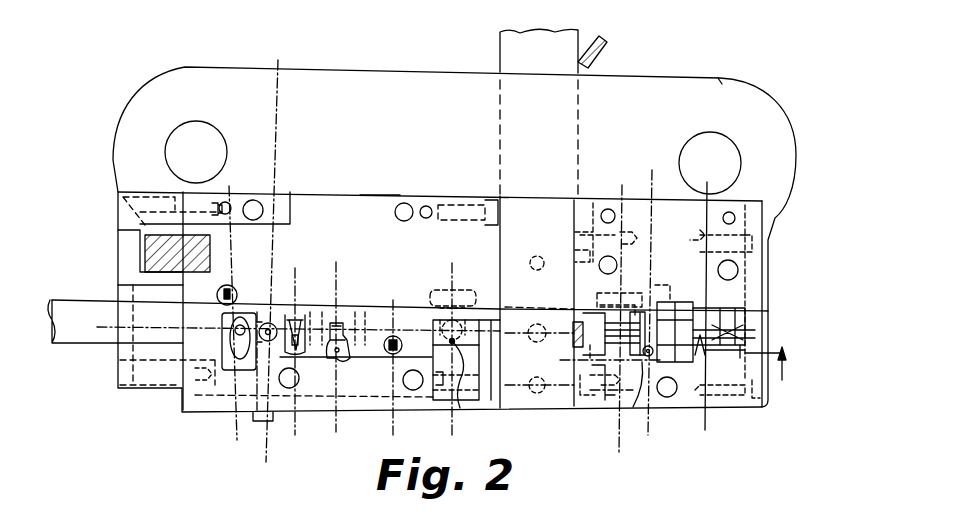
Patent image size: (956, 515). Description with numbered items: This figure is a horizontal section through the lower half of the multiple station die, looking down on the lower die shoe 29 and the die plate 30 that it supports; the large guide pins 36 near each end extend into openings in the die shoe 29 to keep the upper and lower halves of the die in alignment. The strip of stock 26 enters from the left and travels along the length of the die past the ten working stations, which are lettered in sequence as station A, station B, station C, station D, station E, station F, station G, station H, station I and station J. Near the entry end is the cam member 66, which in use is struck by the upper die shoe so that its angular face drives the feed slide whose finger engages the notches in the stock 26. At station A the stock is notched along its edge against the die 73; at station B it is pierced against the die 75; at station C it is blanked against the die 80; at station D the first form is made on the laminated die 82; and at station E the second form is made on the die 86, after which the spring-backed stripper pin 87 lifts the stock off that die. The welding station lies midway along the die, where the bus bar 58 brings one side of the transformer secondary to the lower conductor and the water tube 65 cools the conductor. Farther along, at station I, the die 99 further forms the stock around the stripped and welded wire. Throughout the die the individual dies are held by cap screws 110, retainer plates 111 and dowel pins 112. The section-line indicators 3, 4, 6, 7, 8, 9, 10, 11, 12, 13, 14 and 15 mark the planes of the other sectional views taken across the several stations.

The lower die shoe 29 is at (130, 113).
The guide pins 36 is at (199, 130).
The die plate 30 is at (124, 233).
The cam member 66 is at (160, 252).
The stock 26 is at (70, 335).
The bus bar 58 is at (508, 38).
The water tube 65 is at (604, 41).
The die 73 is at (237, 286).
The die 75 is at (228, 343).
The die 80 is at (296, 320).
The die 82 is at (343, 360).
The die 86 is at (398, 338).
The stripper pin 87 is at (390, 355).
The die 99 is at (632, 322).
The cap screws 110 is at (257, 198).
The retainer plates 111 is at (362, 197).
The dowel pins 112 is at (232, 200).
The section line 3 is at (97, 345).
The section line 4 is at (310, 58).
The section line 6 is at (216, 186).
The section line 7 is at (282, 268).
The section line 8 is at (326, 262).
The section line 9 is at (405, 300).
The section line 10 is at (438, 263).
The section line 11 is at (634, 192).
The section line 12 is at (668, 172).
The section line 13 is at (720, 190).
The section line 14 is at (491, 335).
The section line 15 is at (490, 365).
The station A is at (238, 294).
The station B is at (224, 330).
The station C is at (306, 318).
The station D is at (330, 360).
The station E is at (388, 340).
The station F is at (455, 398).
The station G is at (540, 325).
The station H is at (625, 318).
The station I is at (633, 402).
The station J is at (694, 336).